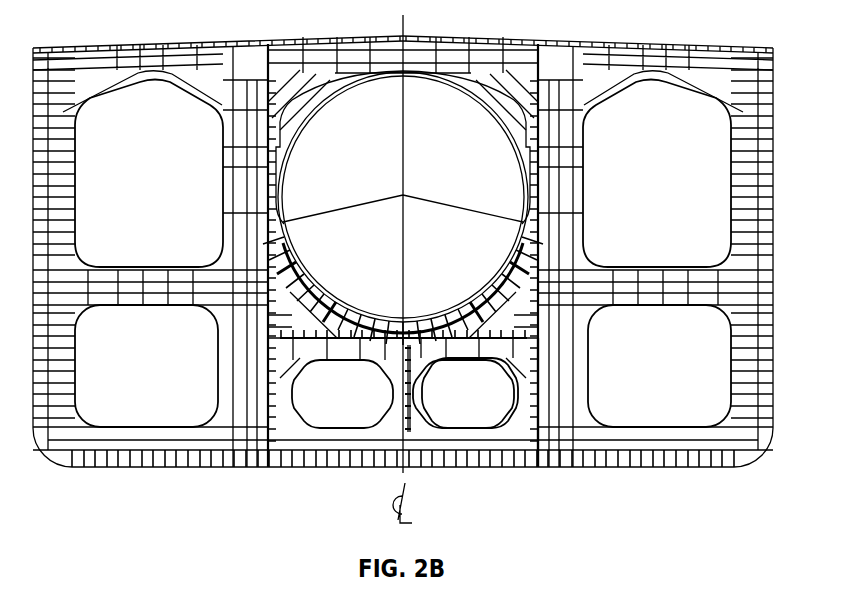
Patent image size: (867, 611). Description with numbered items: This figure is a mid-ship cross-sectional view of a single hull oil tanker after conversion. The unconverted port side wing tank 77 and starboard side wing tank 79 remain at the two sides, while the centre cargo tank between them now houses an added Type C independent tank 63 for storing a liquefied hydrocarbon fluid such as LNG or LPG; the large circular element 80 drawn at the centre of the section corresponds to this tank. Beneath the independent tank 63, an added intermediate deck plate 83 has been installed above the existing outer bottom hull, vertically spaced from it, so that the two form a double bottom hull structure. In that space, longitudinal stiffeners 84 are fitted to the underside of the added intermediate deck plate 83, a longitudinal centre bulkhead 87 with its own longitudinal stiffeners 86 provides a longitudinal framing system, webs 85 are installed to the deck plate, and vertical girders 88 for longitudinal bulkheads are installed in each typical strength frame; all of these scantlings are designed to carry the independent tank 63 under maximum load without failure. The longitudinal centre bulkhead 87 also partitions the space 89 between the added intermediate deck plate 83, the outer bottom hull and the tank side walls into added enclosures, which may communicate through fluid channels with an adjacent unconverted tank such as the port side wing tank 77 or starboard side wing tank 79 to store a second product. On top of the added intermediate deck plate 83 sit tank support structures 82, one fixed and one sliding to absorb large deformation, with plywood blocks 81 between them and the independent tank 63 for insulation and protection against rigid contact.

The independent tank 63 is at (290, 168).
The port side wing tank 77 is at (149, 174).
The starboard side wing tank 79 is at (657, 174).
The cylindrical cargo tank 80 is at (403, 202).
The plywood blocks 81 is at (335, 304).
The tank support structures 82 is at (350, 327).
The added intermediate deck plate 83 is at (412, 325).
The longitudinal stiffeners 84 is at (335, 343).
The webs 85 is at (385, 352).
The longitudinal stiffeners 86 is at (408, 386).
The longitudinal centre bulkhead 87 is at (407, 394).
The vertical girders 88 is at (535, 398).
The space 89 is at (470, 393).